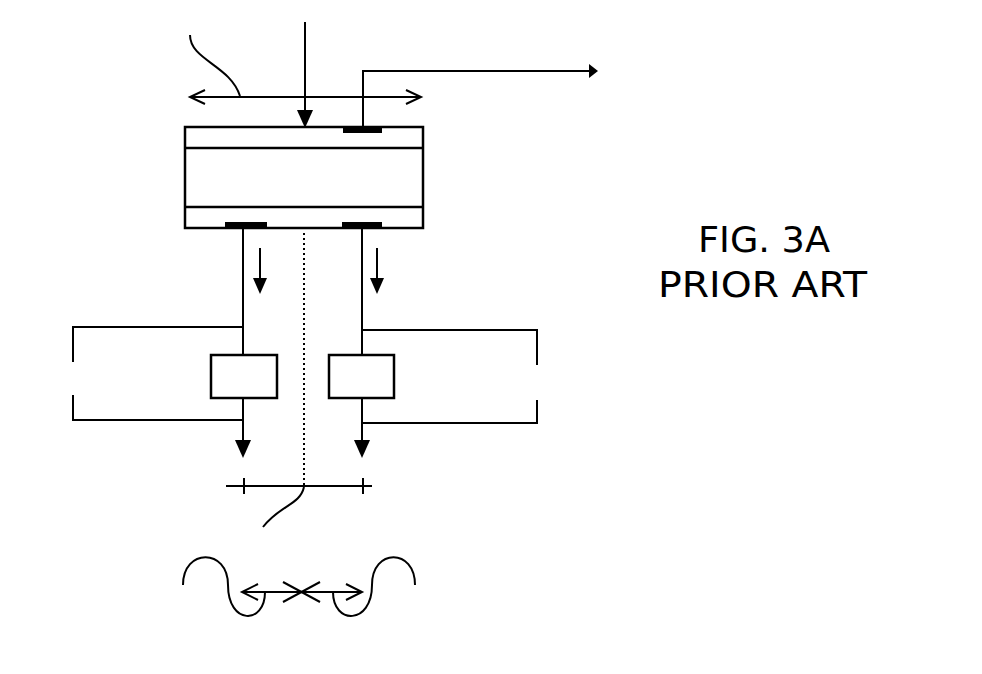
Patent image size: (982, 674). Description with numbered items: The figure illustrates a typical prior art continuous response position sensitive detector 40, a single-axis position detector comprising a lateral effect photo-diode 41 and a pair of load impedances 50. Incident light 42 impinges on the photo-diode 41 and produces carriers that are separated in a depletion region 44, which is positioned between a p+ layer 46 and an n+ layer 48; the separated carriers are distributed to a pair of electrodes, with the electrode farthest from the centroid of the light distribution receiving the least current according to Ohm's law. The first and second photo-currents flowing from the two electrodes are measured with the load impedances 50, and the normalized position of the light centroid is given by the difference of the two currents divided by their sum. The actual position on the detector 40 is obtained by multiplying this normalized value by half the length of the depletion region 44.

The continuous response position sensitive detector 40 is at (552, 297).
The lateral effect photo-diode 41 is at (118, 203).
The incident light 42 is at (305, 45).
The depletion region 44 is at (185, 177).
The p+ layer 46 is at (423, 140).
The n+ layer 48 is at (423, 217).
The load impedances 50 is at (211, 377).